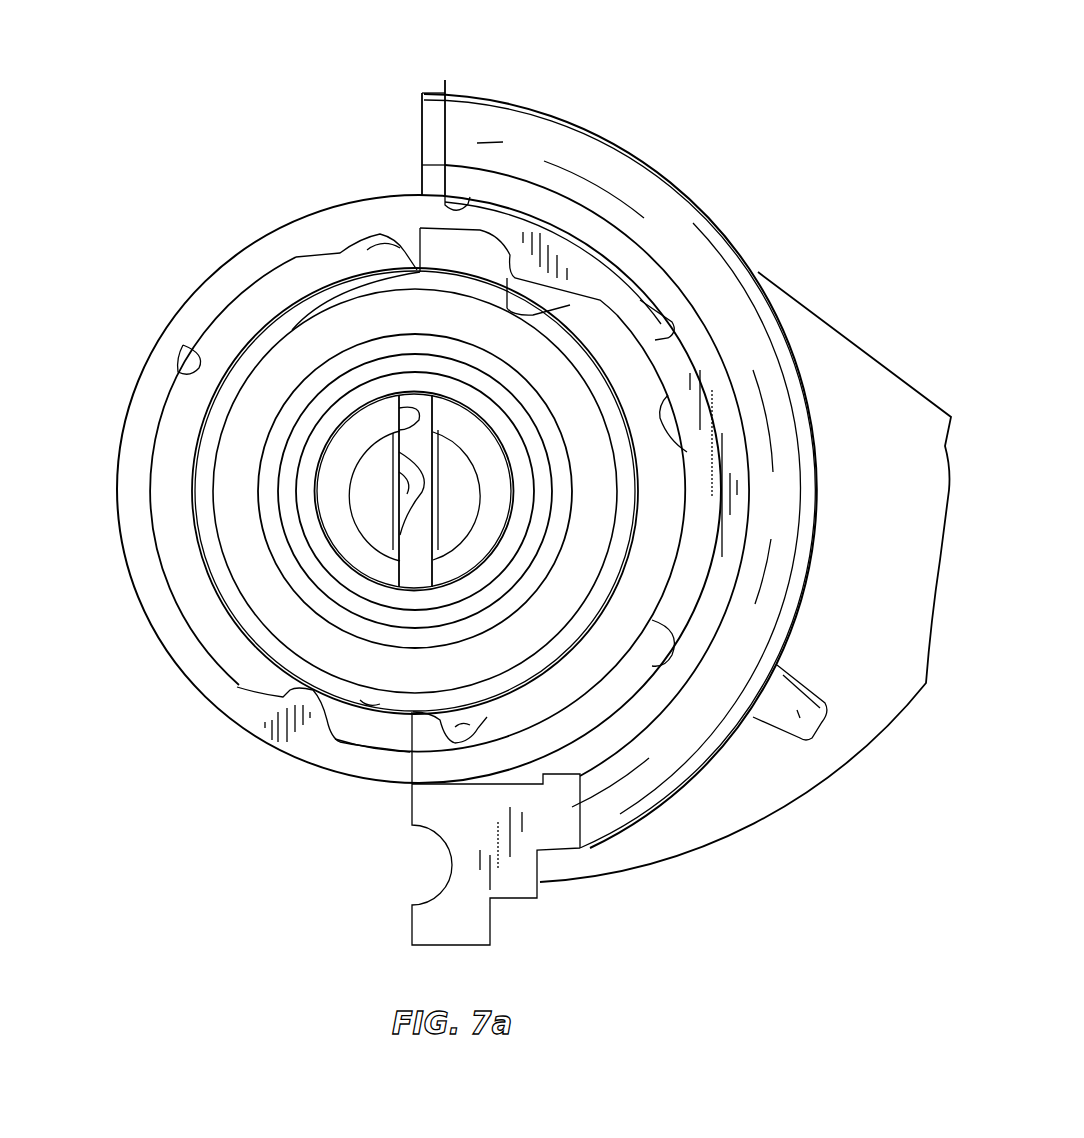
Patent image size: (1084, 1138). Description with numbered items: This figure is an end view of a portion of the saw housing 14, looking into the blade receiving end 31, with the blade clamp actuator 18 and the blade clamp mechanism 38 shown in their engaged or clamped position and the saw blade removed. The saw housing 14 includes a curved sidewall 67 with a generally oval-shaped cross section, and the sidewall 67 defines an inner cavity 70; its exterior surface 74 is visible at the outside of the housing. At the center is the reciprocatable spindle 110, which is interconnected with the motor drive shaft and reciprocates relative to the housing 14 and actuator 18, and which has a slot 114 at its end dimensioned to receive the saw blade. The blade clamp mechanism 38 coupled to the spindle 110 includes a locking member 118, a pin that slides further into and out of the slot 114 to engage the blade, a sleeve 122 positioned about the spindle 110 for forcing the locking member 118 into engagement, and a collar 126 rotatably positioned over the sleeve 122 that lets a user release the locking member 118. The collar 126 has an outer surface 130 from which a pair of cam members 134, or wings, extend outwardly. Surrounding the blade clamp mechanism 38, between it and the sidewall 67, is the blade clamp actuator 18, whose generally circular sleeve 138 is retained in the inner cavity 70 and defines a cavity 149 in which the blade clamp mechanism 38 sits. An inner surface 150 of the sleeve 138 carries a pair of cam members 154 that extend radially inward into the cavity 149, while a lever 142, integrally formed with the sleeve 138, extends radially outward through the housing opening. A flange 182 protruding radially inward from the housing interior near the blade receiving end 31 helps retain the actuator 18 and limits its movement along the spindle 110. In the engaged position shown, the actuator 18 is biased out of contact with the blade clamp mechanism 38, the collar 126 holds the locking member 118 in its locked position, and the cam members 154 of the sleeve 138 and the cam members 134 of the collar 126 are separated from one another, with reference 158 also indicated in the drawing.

The saw housing 14 is at (603, 137).
The blade clamp mechanism actuator 18 is at (200, 672).
The blade receiving end 31 is at (441, 118).
The blade clamp mechanism 38 is at (242, 552).
The sidewall 67 is at (682, 187).
The inner cavity 70 is at (398, 182).
The exterior surface 74 is at (852, 584).
The spindle 110 is at (467, 543).
The slot 114 is at (397, 430).
The locking member 118 is at (407, 487).
The sleeve 122 is at (290, 510).
The collar 126 is at (340, 327).
The outer surface 130 is at (372, 708).
The cam members 134 is at (382, 255).
The sleeve 138 is at (172, 624).
The lever 142 is at (822, 723).
The cavity 149 is at (166, 506).
The inner surface 150 is at (183, 345).
The cam members 154 is at (540, 312).
The channel 158 is at (528, 136).
The flange 182 is at (660, 417).